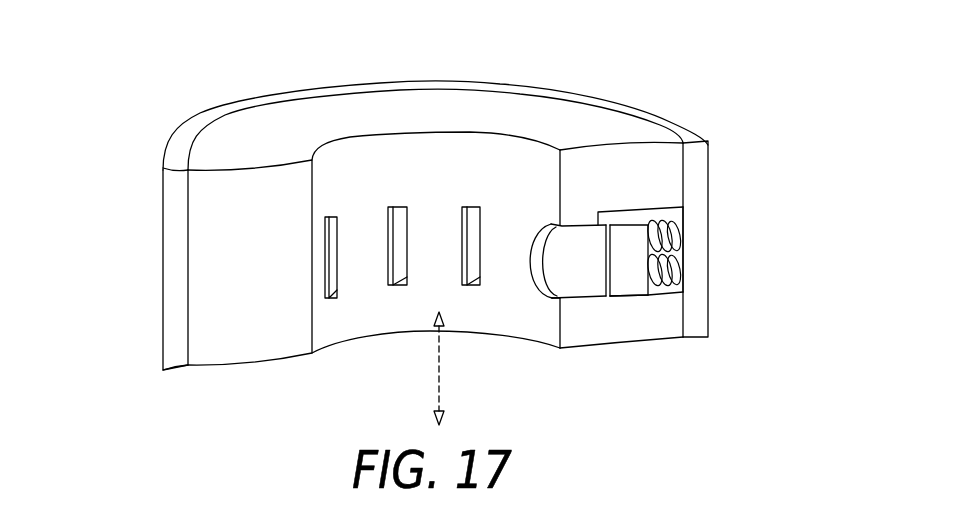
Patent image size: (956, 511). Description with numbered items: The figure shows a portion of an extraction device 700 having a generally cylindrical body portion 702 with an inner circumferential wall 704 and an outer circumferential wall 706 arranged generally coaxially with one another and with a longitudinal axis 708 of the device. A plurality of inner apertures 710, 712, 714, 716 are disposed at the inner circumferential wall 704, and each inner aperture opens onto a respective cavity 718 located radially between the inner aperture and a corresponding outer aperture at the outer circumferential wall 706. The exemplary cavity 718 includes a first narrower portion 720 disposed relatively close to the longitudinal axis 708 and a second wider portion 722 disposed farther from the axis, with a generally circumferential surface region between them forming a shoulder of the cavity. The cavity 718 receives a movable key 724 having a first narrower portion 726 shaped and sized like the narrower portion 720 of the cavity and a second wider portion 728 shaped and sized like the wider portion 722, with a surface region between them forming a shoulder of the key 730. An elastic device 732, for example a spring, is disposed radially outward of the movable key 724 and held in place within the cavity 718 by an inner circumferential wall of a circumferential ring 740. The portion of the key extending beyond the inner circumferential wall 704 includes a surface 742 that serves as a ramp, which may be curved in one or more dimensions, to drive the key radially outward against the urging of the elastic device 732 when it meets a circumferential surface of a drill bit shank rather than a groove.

The extraction device 700 is at (692, 80).
The body portion 702 is at (413, 120).
The inner circumferential wall 704 is at (512, 152).
The outer circumferential wall 706 is at (188, 206).
The longitudinal axis 708 is at (438, 382).
The inner aperture 710 is at (332, 223).
The inner aperture 712 is at (403, 217).
The inner aperture 714 is at (475, 207).
The inner aperture 716 is at (557, 300).
The cavity 718 is at (650, 212).
The first narrower portion of the cavity 720 is at (589, 228).
The second wider portion of the cavity 722 is at (632, 282).
The movable key 724 is at (627, 257).
The first narrower portion of the key 726 is at (568, 252).
The second wider portion of the key 728 is at (665, 290).
The shoulder of the key 730 is at (606, 265).
The elastic device 732 is at (670, 242).
The circumferential ring 740 is at (222, 117).
The surface 742 is at (545, 280).